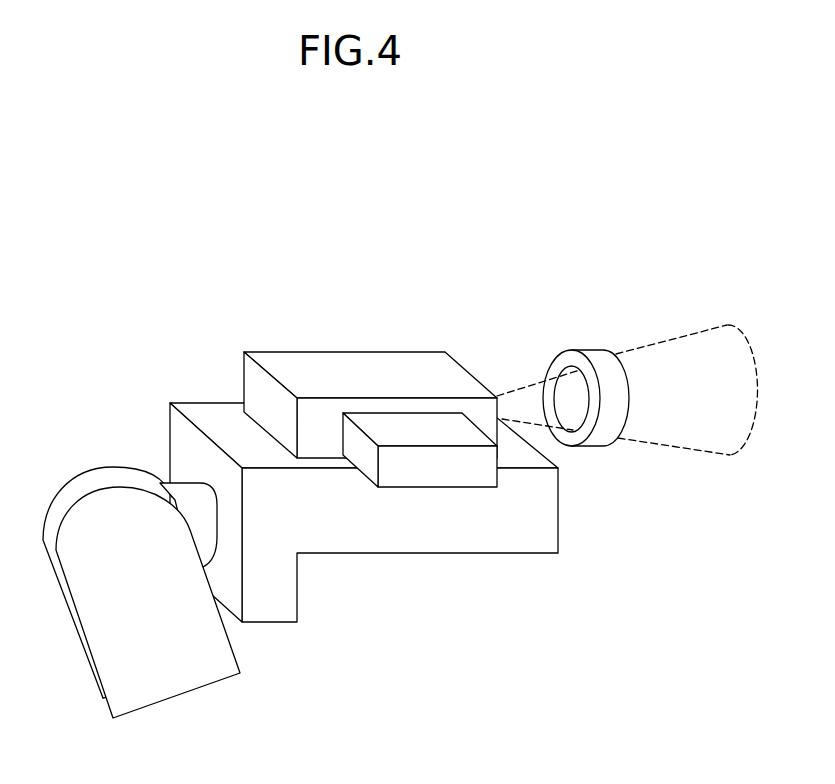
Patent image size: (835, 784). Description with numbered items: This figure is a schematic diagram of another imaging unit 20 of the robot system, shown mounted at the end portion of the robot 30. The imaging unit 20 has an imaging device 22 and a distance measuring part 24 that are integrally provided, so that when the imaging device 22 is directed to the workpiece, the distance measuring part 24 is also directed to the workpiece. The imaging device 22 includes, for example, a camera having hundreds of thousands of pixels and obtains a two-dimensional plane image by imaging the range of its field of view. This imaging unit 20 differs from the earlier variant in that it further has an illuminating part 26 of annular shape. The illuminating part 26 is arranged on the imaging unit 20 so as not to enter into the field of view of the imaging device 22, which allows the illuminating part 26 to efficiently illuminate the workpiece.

The imaging unit 20 is at (400, 404).
The imaging device 22 is at (348, 364).
The distance measuring part 24 is at (415, 470).
The illuminating part 26 is at (570, 350).
The robot 30 is at (74, 456).